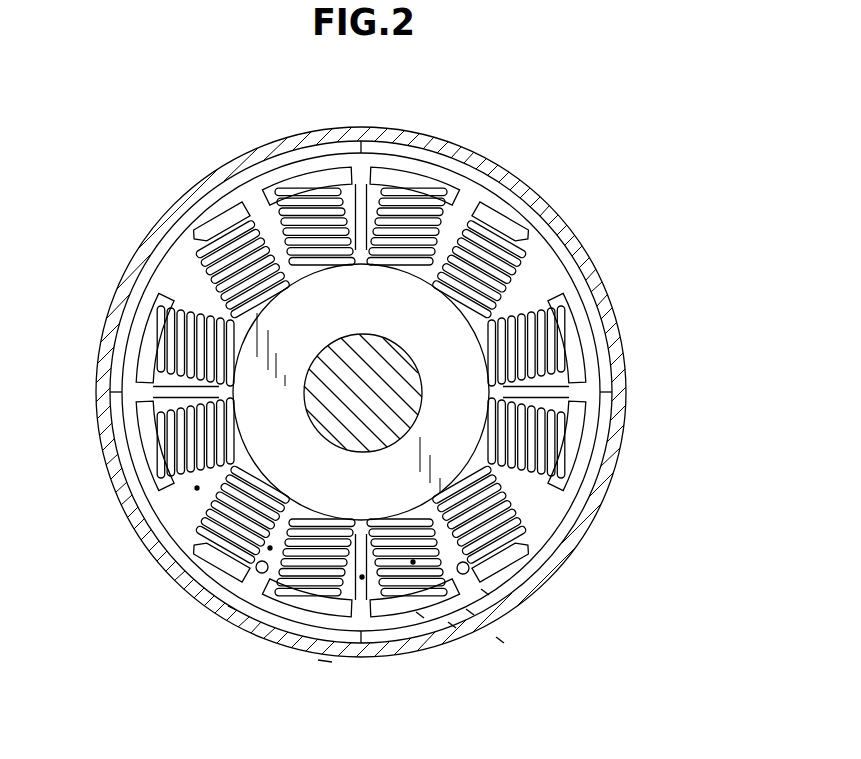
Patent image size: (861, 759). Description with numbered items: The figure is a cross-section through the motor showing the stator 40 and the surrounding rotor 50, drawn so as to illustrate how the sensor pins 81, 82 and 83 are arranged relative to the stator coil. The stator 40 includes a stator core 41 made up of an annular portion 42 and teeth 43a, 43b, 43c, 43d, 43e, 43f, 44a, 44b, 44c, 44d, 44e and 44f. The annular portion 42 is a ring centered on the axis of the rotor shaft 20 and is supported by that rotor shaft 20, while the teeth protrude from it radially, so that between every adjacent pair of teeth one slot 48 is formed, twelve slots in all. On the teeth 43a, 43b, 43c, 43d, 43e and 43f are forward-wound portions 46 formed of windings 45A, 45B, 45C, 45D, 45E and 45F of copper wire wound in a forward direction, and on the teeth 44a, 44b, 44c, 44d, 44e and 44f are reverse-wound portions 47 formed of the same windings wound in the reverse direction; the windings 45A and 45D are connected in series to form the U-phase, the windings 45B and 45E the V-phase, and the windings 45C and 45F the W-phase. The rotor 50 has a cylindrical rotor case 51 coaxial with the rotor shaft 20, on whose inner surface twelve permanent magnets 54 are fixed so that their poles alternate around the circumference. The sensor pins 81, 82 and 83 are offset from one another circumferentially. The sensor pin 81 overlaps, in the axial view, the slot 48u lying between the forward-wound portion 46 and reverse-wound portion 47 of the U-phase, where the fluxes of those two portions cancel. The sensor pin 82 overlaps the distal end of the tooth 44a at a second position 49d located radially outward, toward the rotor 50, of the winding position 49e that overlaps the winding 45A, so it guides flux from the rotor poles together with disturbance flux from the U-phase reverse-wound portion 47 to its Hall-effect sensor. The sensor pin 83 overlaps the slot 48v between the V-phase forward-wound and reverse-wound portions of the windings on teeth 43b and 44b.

The rotor shaft 20 is at (378, 372).
The stator 40 is at (612, 474).
The stator core 41 is at (472, 392).
The annular portion 42 is at (593, 332).
The tooth 43a is at (500, 561).
The tooth 43b is at (305, 588).
The tooth 43c is at (152, 450).
The tooth 43d is at (220, 225).
The tooth 43e is at (400, 183).
The tooth 43f is at (570, 336).
The tooth 44a is at (408, 600).
The tooth 44b is at (222, 561).
The tooth 44c is at (152, 337).
The tooth 44d is at (322, 183).
The tooth 44e is at (502, 222).
The tooth 44f is at (570, 447).
The winding 45A is at (480, 515).
The winding 45B is at (318, 555).
The winding 45C is at (190, 352).
The winding 45D is at (318, 233).
The winding 45E is at (404, 233).
The winding 45F is at (530, 352).
The forward-wound portion 46 is at (361, 409).
The reverse-wound portion 47 is at (362, 172).
The slot 48 is at (369, 591).
The slot 48u is at (470, 568).
The slot 48v is at (260, 574).
The second position 49d is at (470, 612).
The winding position 49e is at (500, 640).
The rotor 50 is at (325, 662).
The rotor case 51 is at (420, 615).
The permanent magnet 54 is at (252, 158).
The sensor pin 81 is at (485, 592).
The sensor pin 82 is at (452, 625).
The sensor pin 83 is at (232, 608).